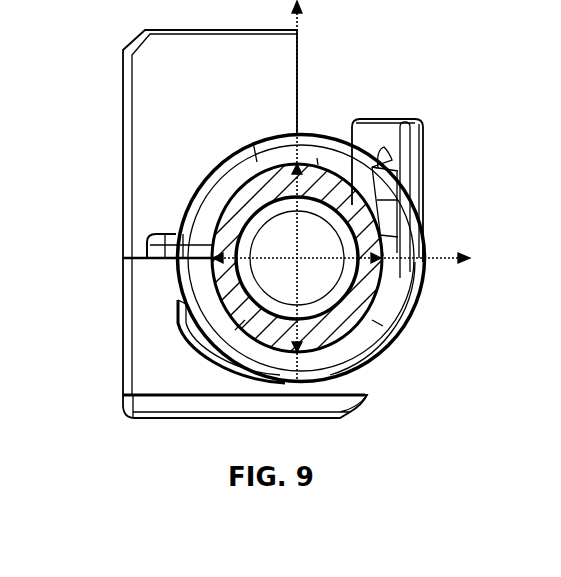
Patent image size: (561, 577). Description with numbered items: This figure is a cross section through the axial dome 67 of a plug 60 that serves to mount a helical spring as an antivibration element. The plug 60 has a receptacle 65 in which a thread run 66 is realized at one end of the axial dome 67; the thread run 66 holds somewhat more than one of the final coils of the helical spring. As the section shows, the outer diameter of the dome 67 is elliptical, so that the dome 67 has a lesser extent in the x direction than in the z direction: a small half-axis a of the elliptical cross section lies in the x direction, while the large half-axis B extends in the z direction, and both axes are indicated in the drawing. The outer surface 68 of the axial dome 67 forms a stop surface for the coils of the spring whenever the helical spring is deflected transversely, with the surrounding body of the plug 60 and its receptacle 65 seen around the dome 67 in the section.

The plug 60 is at (185, 154).
The receptacle 65 is at (394, 365).
The thread run 66 is at (388, 325).
The axial dome 67 is at (228, 285).
The outer surface 68 is at (315, 168).